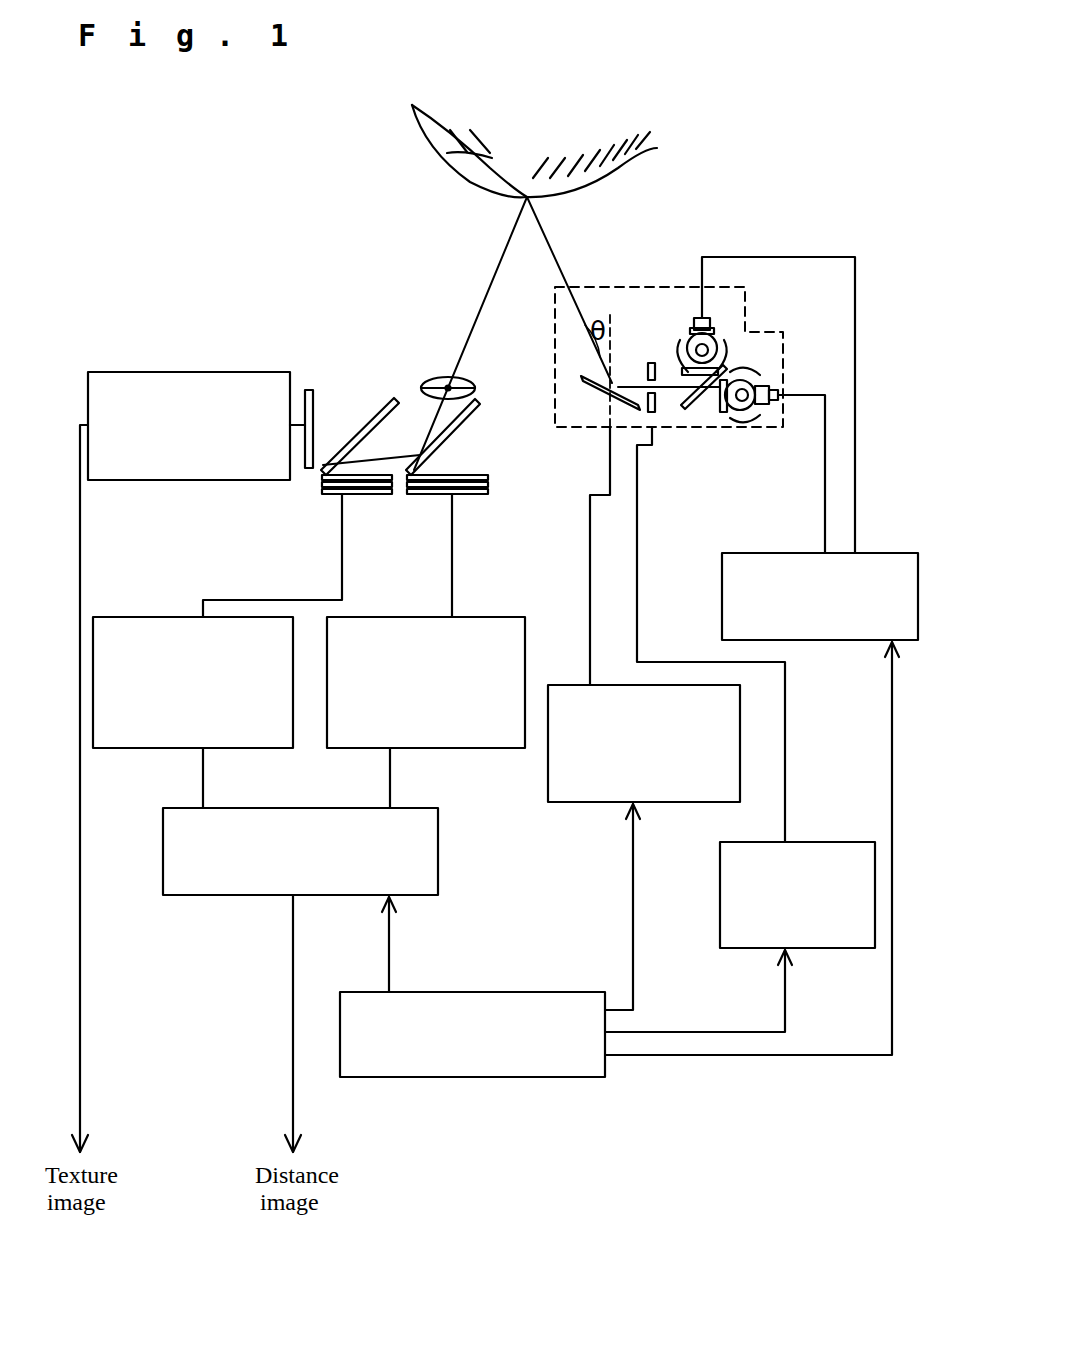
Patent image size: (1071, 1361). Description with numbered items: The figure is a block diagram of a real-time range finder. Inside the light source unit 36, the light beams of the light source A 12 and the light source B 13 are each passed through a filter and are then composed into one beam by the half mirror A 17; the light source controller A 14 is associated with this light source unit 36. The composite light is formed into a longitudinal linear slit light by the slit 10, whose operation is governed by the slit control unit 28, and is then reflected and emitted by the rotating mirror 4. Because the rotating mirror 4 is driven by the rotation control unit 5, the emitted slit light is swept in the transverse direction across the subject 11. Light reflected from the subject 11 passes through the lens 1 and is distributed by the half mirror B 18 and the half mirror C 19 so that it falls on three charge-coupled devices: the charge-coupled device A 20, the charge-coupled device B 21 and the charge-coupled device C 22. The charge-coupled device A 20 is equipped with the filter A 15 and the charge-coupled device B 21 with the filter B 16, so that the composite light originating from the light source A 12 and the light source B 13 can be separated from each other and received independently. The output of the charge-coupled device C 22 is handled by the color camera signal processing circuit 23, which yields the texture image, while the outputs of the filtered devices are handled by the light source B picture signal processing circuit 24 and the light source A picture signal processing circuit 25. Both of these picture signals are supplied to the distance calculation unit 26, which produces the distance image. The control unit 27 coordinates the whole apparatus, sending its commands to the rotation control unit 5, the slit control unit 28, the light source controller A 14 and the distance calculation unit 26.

The lens 1 is at (445, 375).
The rotating mirror 4 is at (585, 395).
The rotation control unit 5 is at (655, 805).
The slit 10 is at (652, 362).
The subject 11 is at (657, 148).
The light source A 12 is at (808, 305).
The light source B 13 is at (745, 425).
The light source controller A 14 is at (820, 642).
The filter A 15 is at (680, 330).
The filter B 16 is at (322, 478).
The half mirror A 17 is at (690, 430).
The half mirror B 18 is at (478, 402).
The half mirror C 19 is at (393, 400).
The charge-coupled device A 20 is at (412, 497).
The charge-coupled device B 21 is at (340, 500).
The charge-coupled device C 22 is at (310, 390).
The color camera signal processing circuit 23 is at (143, 372).
The light source B picture signal processing circuit 24 is at (175, 750).
The light source A picture signal processing circuit 25 is at (370, 750).
The distance calculation unit 26 is at (218, 895).
The control unit 27 is at (605, 1070).
The slit control unit 28 is at (735, 950).
The light source unit 36 is at (745, 290).